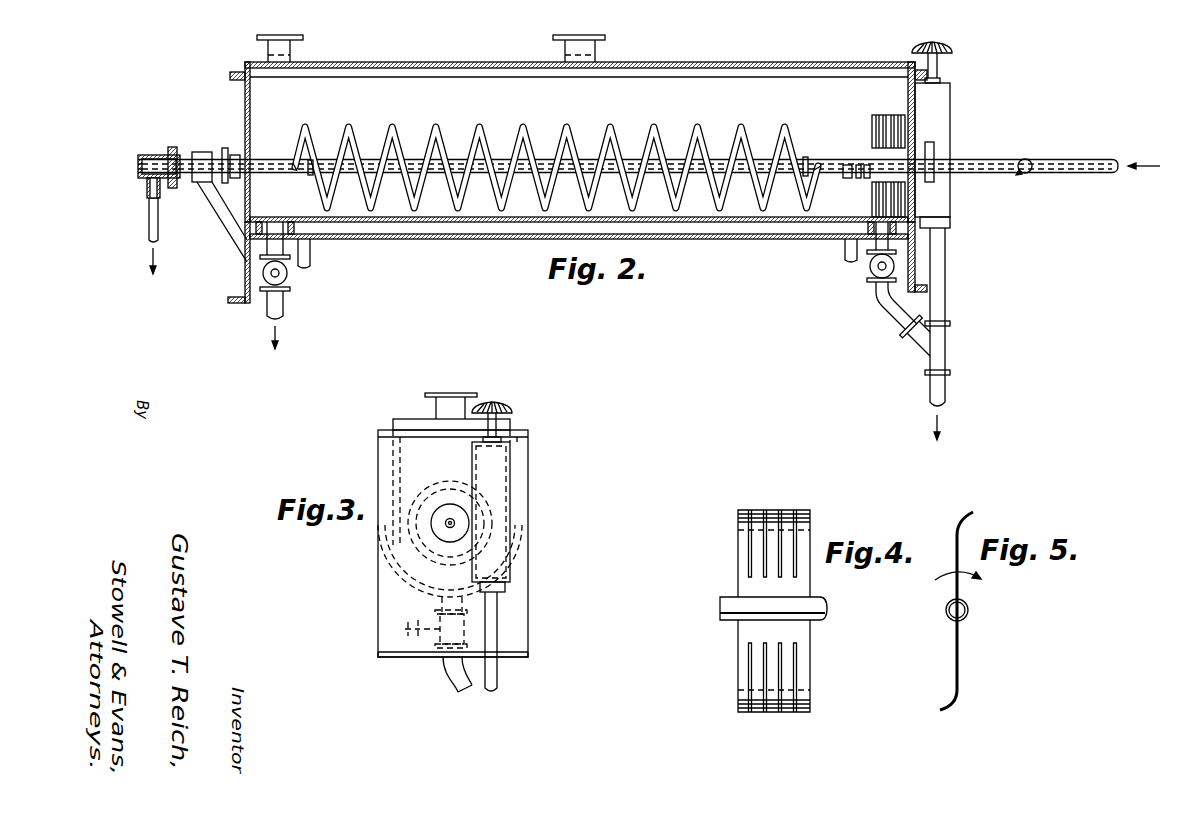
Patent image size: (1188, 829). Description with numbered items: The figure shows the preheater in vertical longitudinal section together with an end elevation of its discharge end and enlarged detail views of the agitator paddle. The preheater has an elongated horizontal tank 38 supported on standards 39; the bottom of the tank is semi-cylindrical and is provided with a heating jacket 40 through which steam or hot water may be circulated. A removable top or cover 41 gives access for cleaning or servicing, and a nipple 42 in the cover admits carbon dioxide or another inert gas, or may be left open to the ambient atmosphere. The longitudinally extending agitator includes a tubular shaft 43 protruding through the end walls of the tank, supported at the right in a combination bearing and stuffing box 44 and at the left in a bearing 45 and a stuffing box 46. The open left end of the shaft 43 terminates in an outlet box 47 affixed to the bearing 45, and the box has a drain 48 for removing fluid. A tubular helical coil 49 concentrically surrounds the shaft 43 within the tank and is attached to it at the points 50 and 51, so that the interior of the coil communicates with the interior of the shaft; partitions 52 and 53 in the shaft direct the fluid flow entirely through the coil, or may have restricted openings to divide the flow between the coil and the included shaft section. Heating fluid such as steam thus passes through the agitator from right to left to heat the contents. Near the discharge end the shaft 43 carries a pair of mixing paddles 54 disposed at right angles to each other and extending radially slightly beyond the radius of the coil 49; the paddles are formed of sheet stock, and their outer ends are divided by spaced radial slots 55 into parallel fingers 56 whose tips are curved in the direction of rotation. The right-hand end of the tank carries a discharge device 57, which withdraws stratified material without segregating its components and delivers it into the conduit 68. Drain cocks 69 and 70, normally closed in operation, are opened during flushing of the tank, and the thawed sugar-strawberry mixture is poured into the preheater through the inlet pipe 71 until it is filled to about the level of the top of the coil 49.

In FIG. 2, the tank 38 is at (247, 105).
In FIG. 3, the tank 38 is at (393, 466).
In FIG. 2, the standards 39 is at (246, 283).
In FIG. 3, the standards 39 is at (520, 651).
In FIG. 2, the heating jacket 40 is at (462, 240).
In FIG. 3, the heating jacket 40 is at (385, 563).
In FIG. 2, the top or cover 41 is at (435, 63).
In FIG. 3, the top or cover 41 is at (410, 419).
In FIG. 2, the nipple 42 is at (597, 50).
In FIG. 2, the shaft 43 is at (1000, 156).
In FIG. 3, the shaft 43 is at (452, 518).
In FIG. 4, the shaft 43 is at (823, 612).
In FIG. 5, the shaft 43 is at (969, 610).
In FIG. 2, the combination bearing and stuffing box 44 is at (934, 142).
In FIG. 3, the combination bearing and stuffing box 44 is at (446, 532).
In FIG. 2, the bearing 45 is at (202, 152).
In FIG. 2, the stuffing box 46 is at (228, 143).
In FIG. 2, the outlet box 47 is at (162, 155).
In FIG. 2, the drain 48 is at (148, 221).
In FIG. 2, the tubular helical coil 49 is at (405, 136).
In FIG. 3, the tubular helical coil 49 is at (445, 482).
In FIG. 2, the attachment point 50 is at (821, 171).
In FIG. 2, the attachment point 51 is at (295, 169).
In FIG. 2, the partition 52 is at (807, 157).
In FIG. 2, the partition 53 is at (312, 176).
In FIG. 2, the mixing paddles 54 is at (858, 163).
In FIG. 4, the mixing paddles 54 is at (759, 628).
In FIG. 5, the mixing paddles 54 is at (960, 653).
In FIG. 4, the radial slots 55 is at (765, 712).
In FIG. 4, the fingers 56 is at (797, 712).
In FIG. 2, the discharge device 57 is at (953, 105).
In FIG. 3, the discharge device 57 is at (511, 482).
In FIG. 2, the conduit 68 is at (946, 304).
In FIG. 3, the conduit 68 is at (498, 684).
In FIG. 2, the drain cock 69 is at (870, 282).
In FIG. 3, the drain cock 69 is at (438, 615).
In FIG. 2, the drain cock 70 is at (290, 288).
In FIG. 2, the inlet pipe 71 is at (292, 50).